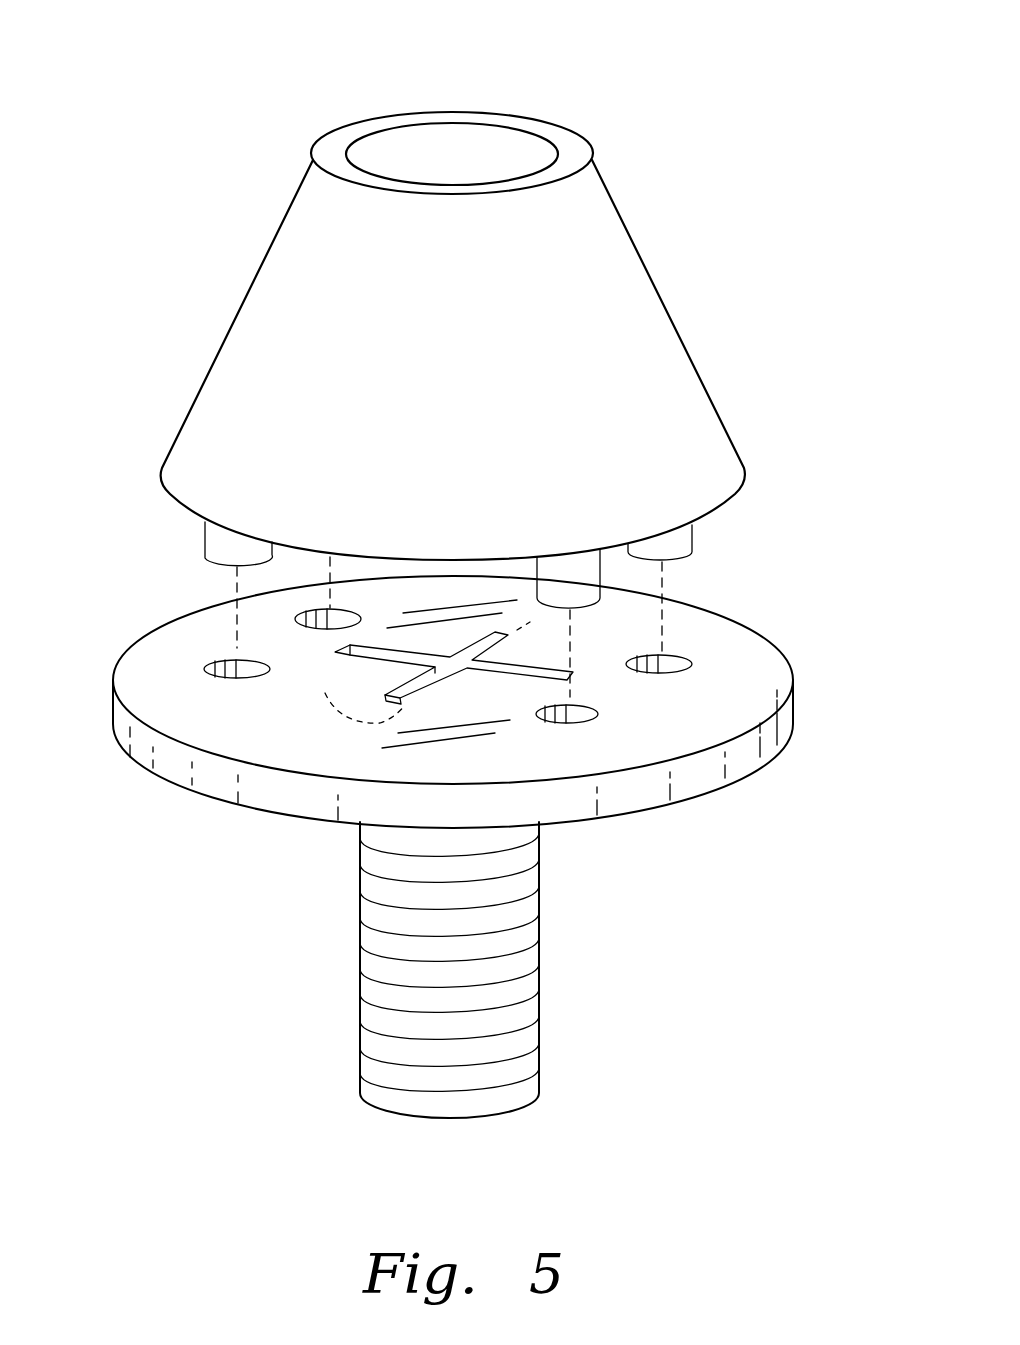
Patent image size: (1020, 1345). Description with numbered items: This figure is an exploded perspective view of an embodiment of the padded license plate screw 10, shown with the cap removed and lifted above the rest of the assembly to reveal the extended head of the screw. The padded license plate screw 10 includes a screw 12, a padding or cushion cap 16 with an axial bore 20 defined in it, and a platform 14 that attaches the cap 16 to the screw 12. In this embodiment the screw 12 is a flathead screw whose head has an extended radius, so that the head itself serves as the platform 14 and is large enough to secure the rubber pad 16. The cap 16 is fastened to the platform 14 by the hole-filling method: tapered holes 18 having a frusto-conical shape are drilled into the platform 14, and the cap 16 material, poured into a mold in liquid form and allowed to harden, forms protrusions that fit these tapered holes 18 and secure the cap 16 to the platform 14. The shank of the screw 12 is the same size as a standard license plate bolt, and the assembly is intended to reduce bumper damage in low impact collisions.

The padded license plate screw 10 is at (184, 217).
The screw 12 is at (540, 960).
The platform 14 is at (718, 632).
The cap 16 is at (618, 248).
The tapered holes 18 is at (303, 615).
The axial bore 20 is at (417, 148).